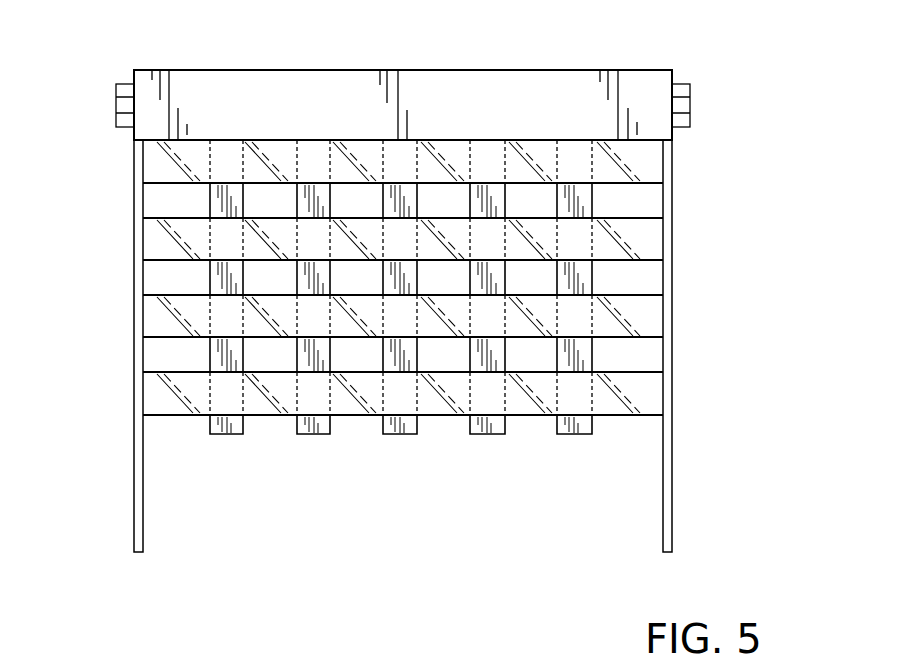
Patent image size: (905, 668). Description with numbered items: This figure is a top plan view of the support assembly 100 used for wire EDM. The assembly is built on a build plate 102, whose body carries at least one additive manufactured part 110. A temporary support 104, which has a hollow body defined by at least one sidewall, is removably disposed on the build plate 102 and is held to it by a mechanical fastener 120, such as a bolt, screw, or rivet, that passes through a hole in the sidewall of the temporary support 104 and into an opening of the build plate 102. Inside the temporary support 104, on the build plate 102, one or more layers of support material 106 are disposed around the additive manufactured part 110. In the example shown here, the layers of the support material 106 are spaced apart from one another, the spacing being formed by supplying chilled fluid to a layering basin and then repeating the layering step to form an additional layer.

The support assembly 100 is at (736, 52).
The build plate 102 is at (452, 70).
The temporary support 104 is at (674, 336).
The support material 106 is at (134, 170).
The additive manufactured part 110 is at (592, 202).
The mechanical fastener 120 is at (690, 104).